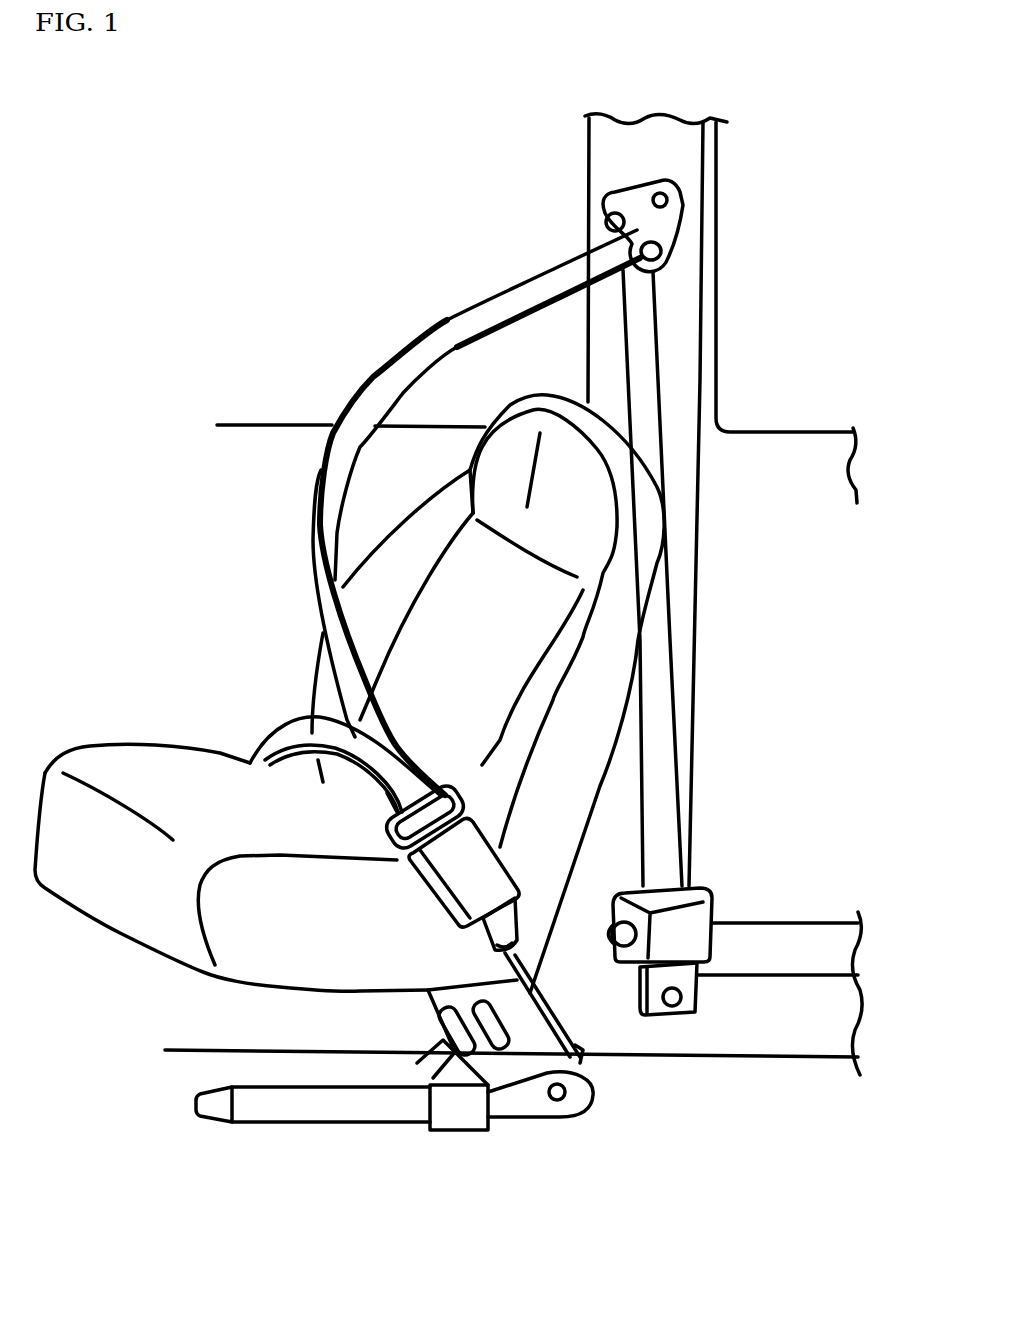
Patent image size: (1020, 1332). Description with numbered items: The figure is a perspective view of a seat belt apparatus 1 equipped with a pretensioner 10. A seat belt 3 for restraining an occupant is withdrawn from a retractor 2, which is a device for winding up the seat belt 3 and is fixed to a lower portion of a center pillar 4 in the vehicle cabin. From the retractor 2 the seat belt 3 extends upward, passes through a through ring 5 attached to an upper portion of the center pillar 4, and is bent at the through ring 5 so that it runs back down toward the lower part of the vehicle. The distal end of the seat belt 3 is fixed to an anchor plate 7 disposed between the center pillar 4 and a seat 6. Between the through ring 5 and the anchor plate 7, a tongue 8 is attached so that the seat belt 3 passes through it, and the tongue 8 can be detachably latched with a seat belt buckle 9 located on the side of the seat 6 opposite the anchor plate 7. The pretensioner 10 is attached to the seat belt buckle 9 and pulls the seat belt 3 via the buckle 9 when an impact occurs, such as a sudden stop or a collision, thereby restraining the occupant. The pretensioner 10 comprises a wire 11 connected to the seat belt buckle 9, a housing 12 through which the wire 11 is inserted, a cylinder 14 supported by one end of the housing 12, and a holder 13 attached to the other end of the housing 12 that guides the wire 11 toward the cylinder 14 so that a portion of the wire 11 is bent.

The seat belt apparatus 1 is at (358, 320).
The retractor 2 is at (693, 938).
The seat belt 3 is at (318, 505).
The center pillar 4 is at (687, 165).
The through ring 5 is at (590, 212).
The seat 6 is at (117, 753).
The anchor plate 7 is at (438, 1038).
The tongue 8 is at (387, 838).
The seat belt buckle 9 is at (470, 885).
The pretensioner 10 is at (613, 1093).
The wire 11 is at (557, 1032).
The housing 12 is at (458, 1118).
The holder 13 is at (565, 1110).
The cylinder 14 is at (305, 1110).